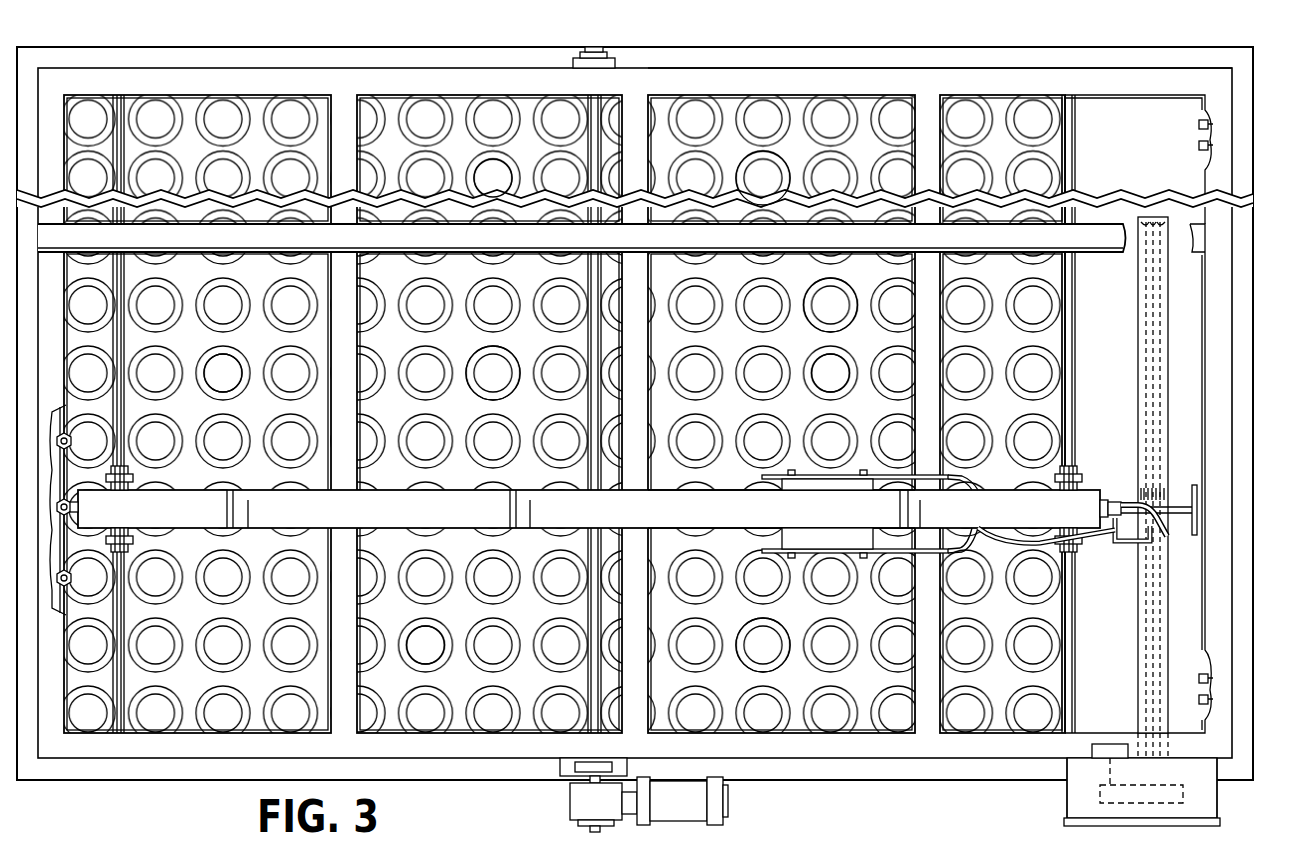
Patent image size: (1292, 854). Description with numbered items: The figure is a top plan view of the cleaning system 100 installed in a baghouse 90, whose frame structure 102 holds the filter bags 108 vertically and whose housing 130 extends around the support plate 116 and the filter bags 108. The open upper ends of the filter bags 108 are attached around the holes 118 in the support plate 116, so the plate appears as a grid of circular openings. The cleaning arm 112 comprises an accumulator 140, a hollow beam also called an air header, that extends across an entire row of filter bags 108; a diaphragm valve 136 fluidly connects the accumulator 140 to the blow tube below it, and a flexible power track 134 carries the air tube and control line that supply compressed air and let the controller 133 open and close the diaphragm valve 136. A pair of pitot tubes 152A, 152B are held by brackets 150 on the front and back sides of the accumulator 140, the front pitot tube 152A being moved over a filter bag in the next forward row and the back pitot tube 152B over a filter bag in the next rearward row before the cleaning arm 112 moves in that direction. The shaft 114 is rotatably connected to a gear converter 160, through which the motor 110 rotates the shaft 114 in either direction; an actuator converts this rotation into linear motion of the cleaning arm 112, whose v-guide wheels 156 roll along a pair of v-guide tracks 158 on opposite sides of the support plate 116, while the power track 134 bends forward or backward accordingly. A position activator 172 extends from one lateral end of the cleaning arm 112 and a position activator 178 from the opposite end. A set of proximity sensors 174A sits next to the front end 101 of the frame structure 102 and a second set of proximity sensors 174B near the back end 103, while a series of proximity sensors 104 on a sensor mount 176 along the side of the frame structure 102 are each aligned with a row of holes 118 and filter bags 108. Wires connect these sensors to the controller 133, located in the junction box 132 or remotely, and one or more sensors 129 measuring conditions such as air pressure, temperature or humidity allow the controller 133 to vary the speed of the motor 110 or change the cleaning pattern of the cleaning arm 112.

The baghouse 90 is at (1078, 41).
The cleaning system 100 is at (165, 788).
The front end 101 is at (860, 768).
The frame structure 102 is at (207, 75).
The back end 103 is at (788, 75).
The proximity sensors 104 is at (70, 440).
The filter bags 108 is at (791, 165).
The motor 110 is at (728, 801).
The cleaning arm 112 is at (1090, 556).
The shaft 114 is at (586, 345).
The support plate 116 is at (255, 150).
The holes 118 is at (498, 180).
The sensors 129 is at (1110, 744).
The housing 130 is at (365, 47).
The junction box 132 is at (1066, 800).
The controller 133 is at (1184, 793).
The flexible power track 134 is at (1138, 305).
The diaphragm valve 136 is at (1113, 500).
The accumulator 140 is at (456, 508).
The brackets 150 is at (820, 526).
The front pitot tube 152A is at (785, 553).
The back pitot tube 152B is at (785, 475).
The v-guide wheels 156 is at (134, 542).
The v-guide tracks 158 is at (126, 695).
The gear converter 160 is at (569, 802).
The position activator 172 is at (1198, 510).
The proximity sensors 174A is at (1198, 678).
The proximity sensors 174B is at (1198, 125).
The sensor mount 176 is at (116, 268).
The position activator 178 is at (80, 504).